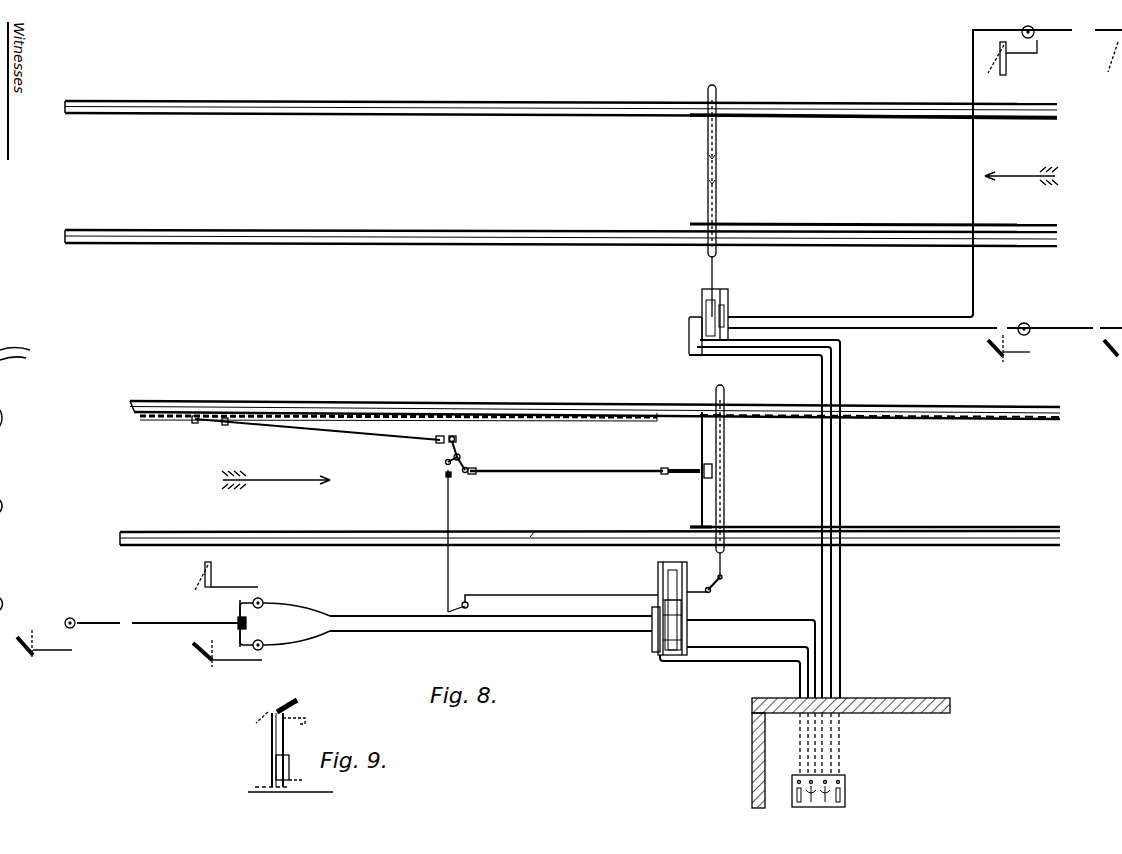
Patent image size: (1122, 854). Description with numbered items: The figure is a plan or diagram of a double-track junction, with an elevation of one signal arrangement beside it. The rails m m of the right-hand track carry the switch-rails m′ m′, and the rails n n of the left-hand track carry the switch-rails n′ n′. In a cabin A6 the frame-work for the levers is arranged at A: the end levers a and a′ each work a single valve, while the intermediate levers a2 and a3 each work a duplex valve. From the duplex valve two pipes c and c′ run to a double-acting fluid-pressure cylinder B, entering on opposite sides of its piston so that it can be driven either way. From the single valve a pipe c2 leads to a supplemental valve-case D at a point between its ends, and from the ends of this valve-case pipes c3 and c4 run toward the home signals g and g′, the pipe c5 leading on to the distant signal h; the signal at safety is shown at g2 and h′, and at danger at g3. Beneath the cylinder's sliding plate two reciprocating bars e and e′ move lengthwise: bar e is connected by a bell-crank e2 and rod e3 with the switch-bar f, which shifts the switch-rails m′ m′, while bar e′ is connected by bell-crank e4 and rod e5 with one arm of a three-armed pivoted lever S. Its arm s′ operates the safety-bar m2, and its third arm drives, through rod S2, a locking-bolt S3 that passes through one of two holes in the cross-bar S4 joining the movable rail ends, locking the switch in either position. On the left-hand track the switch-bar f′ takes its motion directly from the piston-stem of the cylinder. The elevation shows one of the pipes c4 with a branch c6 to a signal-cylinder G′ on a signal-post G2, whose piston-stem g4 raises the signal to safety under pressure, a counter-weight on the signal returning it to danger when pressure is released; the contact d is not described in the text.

In FIG. 8, the rails of the left-hand track n is at (561, 164).
In FIG. 8, the switch-rails of the left-hand track n′ is at (873, 170).
In FIG. 8, the rails of the right-hand track m is at (590, 464).
In FIG. 8, the switch-rails of the right-hand track m′ is at (875, 471).
In FIG. 8, the safety-bar m2 is at (398, 428).
In FIG. 8, the switch-bar f is at (726, 469).
In FIG. 8, the switch-bar of the left-hand track f′ is at (719, 201).
In FIG. 8, the double-acting fluid-pressure cylinder B is at (689, 331).
In FIG. 8, the supplemental valve-case D is at (728, 311).
In FIG. 8, the pipe c is at (763, 519).
In FIG. 8, the pipe c′ is at (763, 522).
In FIG. 8, the pipe c2 is at (761, 526).
In FIG. 8, the pipe c3 is at (667, 323).
In FIG. 8, the pipe c4 is at (692, 486).
In FIG. 9, the pipe c4 is at (300, 793).
In FIG. 8, the pipe c5 is at (157, 612).
In FIG. 9, the branch pipe c6 is at (304, 779).
In FIG. 8, the three-armed pivoted lever S is at (459, 457).
In FIG. 8, the arm of the three-armed lever s′ is at (452, 430).
In FIG. 8, the rod S2 is at (568, 463).
In FIG. 8, the locking-bolt S3 is at (690, 464).
In FIG. 8, the cross-bar S4 is at (698, 469).
In FIG. 8, the reciprocating bar e is at (697, 584).
In FIG. 8, the reciprocating bar e′ is at (561, 588).
In FIG. 8, the bell-crank e2 is at (719, 586).
In FIG. 8, the rod e3 is at (729, 566).
In FIG. 8, the bell-crank e4 is at (467, 607).
In FIG. 8, the rod e5 is at (456, 541).
In FIG. 8, the home signal g is at (648, 492).
In FIG. 9, the home signal g is at (294, 710).
In FIG. 8, the home signal g′ is at (651, 317).
In FIG. 8, the signal at safety position g2 is at (605, 503).
In FIG. 8, the signal at danger position g3 is at (616, 315).
In FIG. 9, the piston-stem g4 is at (293, 750).
In FIG. 8, the distant signal h is at (590, 484).
In FIG. 8, the distant signal at safety h′ is at (40, 646).
In FIG. 8, the contact d is at (248, 623).
In FIG. 8, the frame-work for the levers A is at (826, 788).
In FIG. 8, the cabin A6 is at (841, 753).
In FIG. 8, the end lever a is at (793, 798).
In FIG. 8, the end lever a′ is at (845, 798).
In FIG. 8, the intermediate lever a2 is at (812, 803).
In FIG. 8, the intermediate lever a3 is at (830, 803).
In FIG. 9, the signal-cylinder G′ is at (293, 767).
In FIG. 9, the signal-post G2 is at (265, 749).